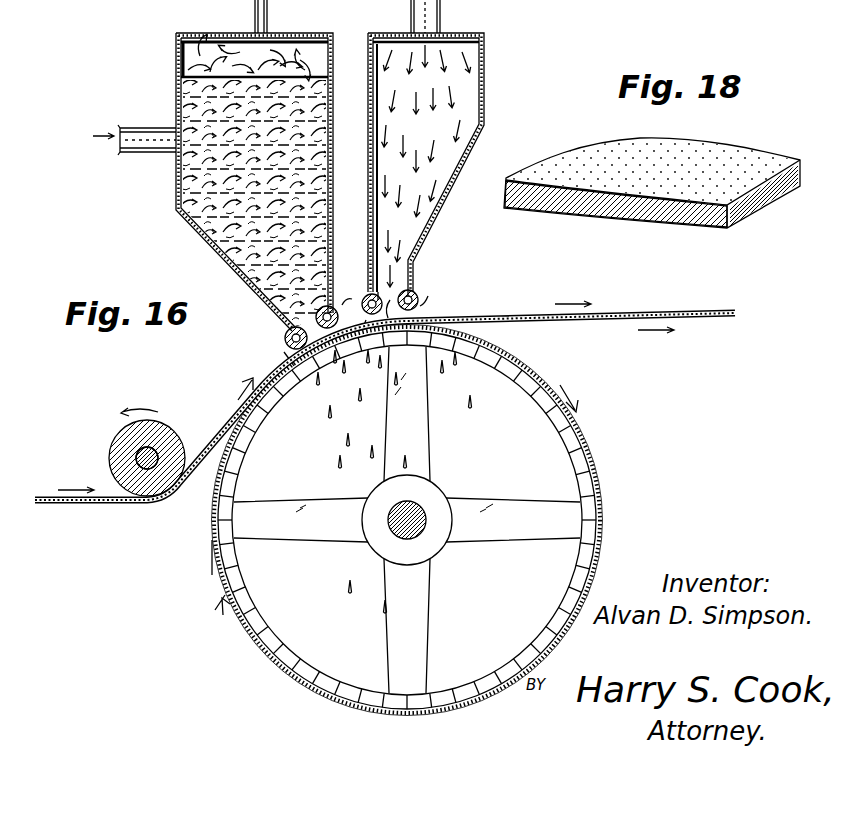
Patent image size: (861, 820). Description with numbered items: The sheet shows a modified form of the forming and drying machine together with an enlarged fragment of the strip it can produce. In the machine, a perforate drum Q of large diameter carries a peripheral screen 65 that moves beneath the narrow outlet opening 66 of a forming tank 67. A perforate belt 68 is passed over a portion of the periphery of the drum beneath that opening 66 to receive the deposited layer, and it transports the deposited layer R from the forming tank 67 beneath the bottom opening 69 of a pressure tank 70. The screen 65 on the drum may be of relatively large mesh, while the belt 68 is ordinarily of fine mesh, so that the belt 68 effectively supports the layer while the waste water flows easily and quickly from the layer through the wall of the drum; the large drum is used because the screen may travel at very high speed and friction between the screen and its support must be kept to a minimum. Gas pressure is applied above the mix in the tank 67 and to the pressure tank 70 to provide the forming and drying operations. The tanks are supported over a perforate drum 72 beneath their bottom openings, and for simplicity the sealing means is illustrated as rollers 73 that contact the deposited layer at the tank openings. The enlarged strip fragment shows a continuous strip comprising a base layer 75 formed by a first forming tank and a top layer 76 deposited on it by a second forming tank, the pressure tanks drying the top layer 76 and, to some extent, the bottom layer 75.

In FIG. 16, the peripheral screen 65 is at (246, 642).
In FIG. 16, the narrow outlet opening 66 is at (290, 335).
In FIG. 16, the forming tank 67 is at (176, 210).
In FIG. 16, the perforate belt 68 is at (96, 504).
In FIG. 16, the bottom opening 69 is at (388, 300).
In FIG. 16, the pressure tank 70 is at (490, 122).
In FIG. 16, the perforate drum 72 is at (120, 0).
In FIG. 16, the rollers 73 is at (338, 310).
In FIG. 18, the base layer 75 is at (752, 205).
In FIG. 18, the top layer 76 is at (758, 168).
In FIG. 16, the deposited layer R is at (516, 315).
In FIG. 16, the perforate drum Q is at (204, 561).